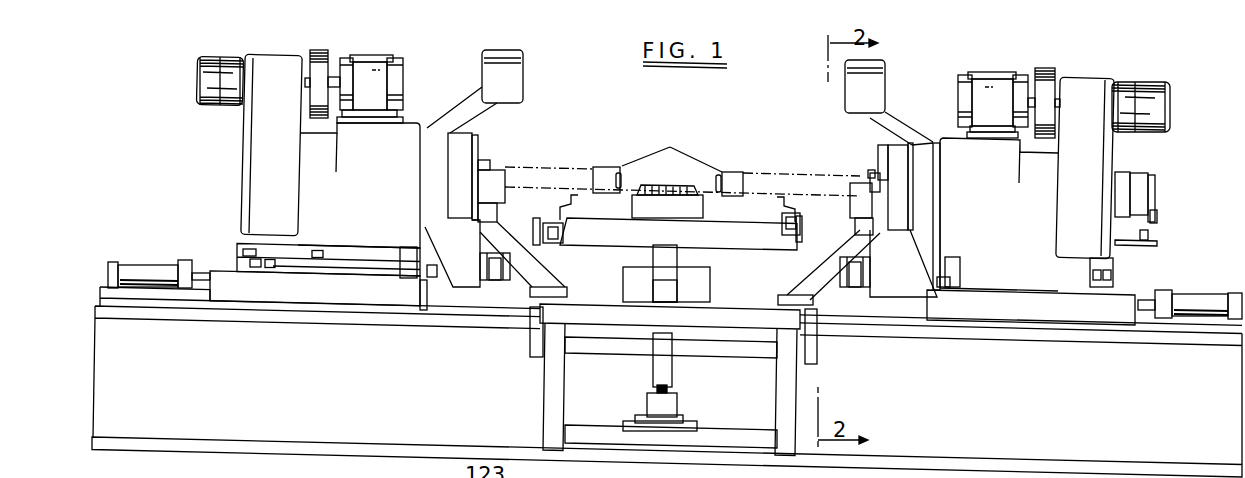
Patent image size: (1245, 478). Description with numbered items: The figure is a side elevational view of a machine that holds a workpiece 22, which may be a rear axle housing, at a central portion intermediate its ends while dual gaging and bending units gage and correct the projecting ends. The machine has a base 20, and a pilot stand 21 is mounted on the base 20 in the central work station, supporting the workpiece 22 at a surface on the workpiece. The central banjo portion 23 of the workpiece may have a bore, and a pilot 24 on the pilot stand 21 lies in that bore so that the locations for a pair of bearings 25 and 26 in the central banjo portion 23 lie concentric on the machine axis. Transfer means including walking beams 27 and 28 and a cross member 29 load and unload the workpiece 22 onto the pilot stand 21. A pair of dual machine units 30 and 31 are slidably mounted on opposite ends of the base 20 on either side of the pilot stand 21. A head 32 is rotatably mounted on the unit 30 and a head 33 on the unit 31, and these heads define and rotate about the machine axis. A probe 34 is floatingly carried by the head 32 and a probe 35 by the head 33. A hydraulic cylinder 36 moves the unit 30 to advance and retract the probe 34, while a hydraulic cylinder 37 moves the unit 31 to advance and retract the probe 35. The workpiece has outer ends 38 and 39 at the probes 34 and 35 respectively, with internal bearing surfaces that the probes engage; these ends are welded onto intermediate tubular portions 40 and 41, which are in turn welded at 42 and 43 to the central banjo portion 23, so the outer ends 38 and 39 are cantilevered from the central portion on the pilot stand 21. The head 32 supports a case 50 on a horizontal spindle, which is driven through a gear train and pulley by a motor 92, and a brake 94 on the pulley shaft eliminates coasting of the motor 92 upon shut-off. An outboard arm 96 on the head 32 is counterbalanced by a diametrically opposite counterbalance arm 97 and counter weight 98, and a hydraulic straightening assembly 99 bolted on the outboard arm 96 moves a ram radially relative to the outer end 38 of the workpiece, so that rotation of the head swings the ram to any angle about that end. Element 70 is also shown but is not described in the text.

The base 20 is at (95, 390).
The pilot stand 21 is at (705, 213).
The workpiece 22 is at (655, 142).
The central banjo portion 23 is at (690, 152).
The pilot 24 is at (632, 190).
The bearing 25 is at (618, 172).
The bearing 26 is at (720, 174).
The walking beam 27 is at (543, 254).
The walking beam 28 is at (808, 263).
The cross member 29 is at (676, 244).
The machine unit 30 is at (996, 224).
The machine unit 31 is at (342, 206).
The head 32 is at (922, 187).
The head 33 is at (435, 187).
The probe 34 is at (885, 170).
The probe 35 is at (487, 160).
The hydraulic cylinder 36 is at (1185, 290).
The hydraulic cylinder 37 is at (153, 262).
The outer end 38 is at (868, 172).
The outer end 39 is at (490, 170).
The intermediate tubular portion 40 is at (798, 173).
The intermediate tubular portion 41 is at (537, 165).
The weld 42 is at (743, 172).
The weld 43 is at (600, 167).
The case 50 is at (908, 203).
The stop member 70 is at (883, 145).
The motor 92 is at (380, 55).
The brake 94 is at (213, 60).
The outboard arm 96 is at (468, 263).
The counterbalance arm 97 is at (453, 112).
The counter weight 98 is at (485, 53).
The hydraulic straightening assembly 99 is at (493, 288).